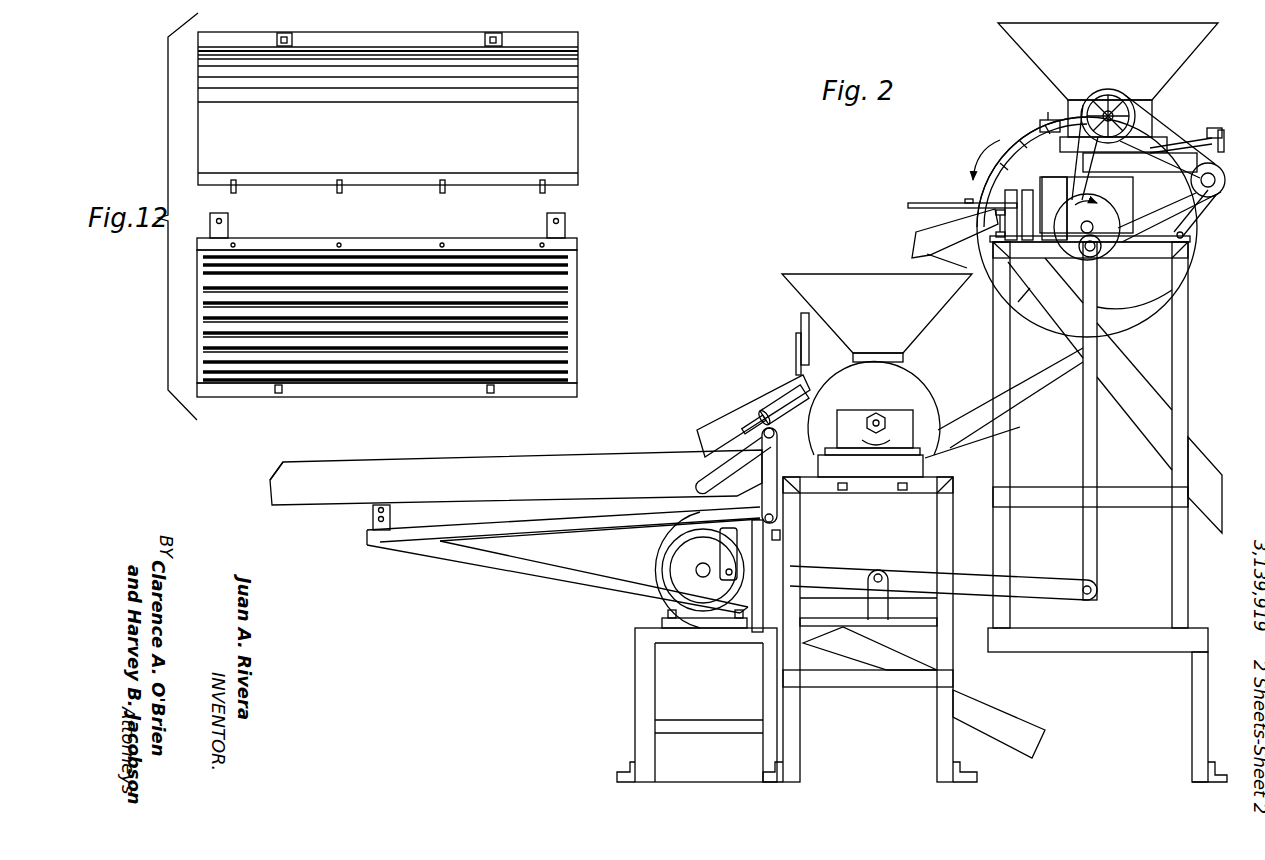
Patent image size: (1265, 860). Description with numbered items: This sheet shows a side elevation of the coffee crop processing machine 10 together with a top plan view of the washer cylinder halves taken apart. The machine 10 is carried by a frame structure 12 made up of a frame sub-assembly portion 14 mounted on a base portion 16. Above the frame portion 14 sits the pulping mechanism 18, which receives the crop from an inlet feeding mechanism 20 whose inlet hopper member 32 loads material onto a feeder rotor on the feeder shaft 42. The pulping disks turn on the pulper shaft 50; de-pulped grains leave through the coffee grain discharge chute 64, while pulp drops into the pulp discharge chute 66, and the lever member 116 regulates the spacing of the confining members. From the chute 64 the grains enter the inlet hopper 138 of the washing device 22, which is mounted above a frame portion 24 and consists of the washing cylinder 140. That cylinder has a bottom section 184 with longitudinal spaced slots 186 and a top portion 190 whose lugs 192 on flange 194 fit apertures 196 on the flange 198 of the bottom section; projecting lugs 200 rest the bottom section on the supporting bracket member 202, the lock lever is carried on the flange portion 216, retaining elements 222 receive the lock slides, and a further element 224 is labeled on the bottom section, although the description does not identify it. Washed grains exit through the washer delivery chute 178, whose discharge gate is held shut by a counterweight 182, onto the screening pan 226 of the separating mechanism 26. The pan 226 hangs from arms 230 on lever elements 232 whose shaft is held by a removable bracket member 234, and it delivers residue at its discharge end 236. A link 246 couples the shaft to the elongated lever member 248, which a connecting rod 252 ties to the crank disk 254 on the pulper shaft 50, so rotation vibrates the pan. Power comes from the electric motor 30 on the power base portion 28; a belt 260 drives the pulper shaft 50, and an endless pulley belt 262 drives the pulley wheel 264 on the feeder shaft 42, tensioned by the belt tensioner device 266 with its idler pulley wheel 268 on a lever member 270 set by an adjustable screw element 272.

In FIG. 2, the coffee crop processing machine 10 is at (810, 145).
In FIG. 2, the frame structure 12 is at (1190, 375).
In FIG. 2, the frame sub-assembly portion 14 is at (1192, 312).
In FIG. 2, the base portion 16 is at (1210, 692).
In FIG. 2, the pulping mechanism 18 is at (1020, 150).
In FIG. 2, the inlet feeding mechanism 20 is at (1183, 98).
In FIG. 2, the washing device 22 is at (778, 332).
In FIG. 2, the frame portion 24 is at (965, 540).
In FIG. 2, the separating mechanism 26 is at (462, 457).
In FIG. 2, the power base portion 28 is at (633, 676).
In FIG. 2, the electric motor 30 is at (648, 562).
In FIG. 2, the inlet hopper member 32 is at (1020, 45).
In FIG. 2, the feeder shaft 42 is at (1122, 106).
In FIG. 2, the pulper shaft 50 is at (1086, 229).
In FIG. 2, the coffee grain discharge chute 64 is at (930, 232).
In FIG. 2, the pulp discharge chute 66 is at (1200, 463).
In FIG. 2, the lever member 116 is at (917, 203).
In FIG. 2, the inlet hopper 138 is at (833, 287).
In FIG. 2, the washing cylinder 140 is at (940, 390).
In FIG. 2, the washer delivery chute 178 is at (733, 418).
In FIG. 2, the counterweight 182 is at (780, 395).
In FIG. 12, the bottom section 184 is at (578, 325).
In FIG. 12, the longitudinal spaced slots 186 is at (575, 332).
In FIG. 12, the top portion 190 is at (572, 108).
In FIG. 12, the lugs 192 is at (548, 188).
In FIG. 12, the flange 194 is at (572, 178).
In FIG. 12, the apertures 196 is at (445, 243).
In FIG. 12, the flange 198 is at (574, 247).
In FIG. 12, the projecting lugs 200 is at (228, 236).
In FIG. 2, the supporting bracket member 202 is at (965, 443).
In FIG. 12, the flange portion 216 is at (568, 33).
In FIG. 12, the retaining elements 222 is at (278, 394).
In FIG. 12, the bottom strip 224 is at (320, 397).
In FIG. 2, the screening pan 226 is at (538, 462).
In FIG. 2, the arms 230 is at (720, 465).
In FIG. 2, the lever elements 232 is at (777, 473).
In FIG. 2, the removable bracket member 234 is at (783, 540).
In FIG. 2, the discharge end 236 is at (268, 490).
In FIG. 2, the link 246 is at (728, 543).
In FIG. 2, the elongated lever member 248 is at (1040, 600).
In FIG. 2, the connecting rod 252 is at (1097, 452).
In FIG. 2, the crank disk 254 is at (1082, 300).
In FIG. 2, the belt 260 is at (1052, 380).
In FIG. 2, the endless pulley belt 262 is at (1168, 106).
In FIG. 2, the pulley wheel 264 is at (1108, 95).
In FIG. 2, the belt tensioner device 266 is at (1220, 198).
In FIG. 2, the idler pulley wheel 268 is at (1223, 184).
In FIG. 2, the lever member 270 is at (1200, 222).
In FIG. 2, the adjustable screw element 272 is at (1226, 163).